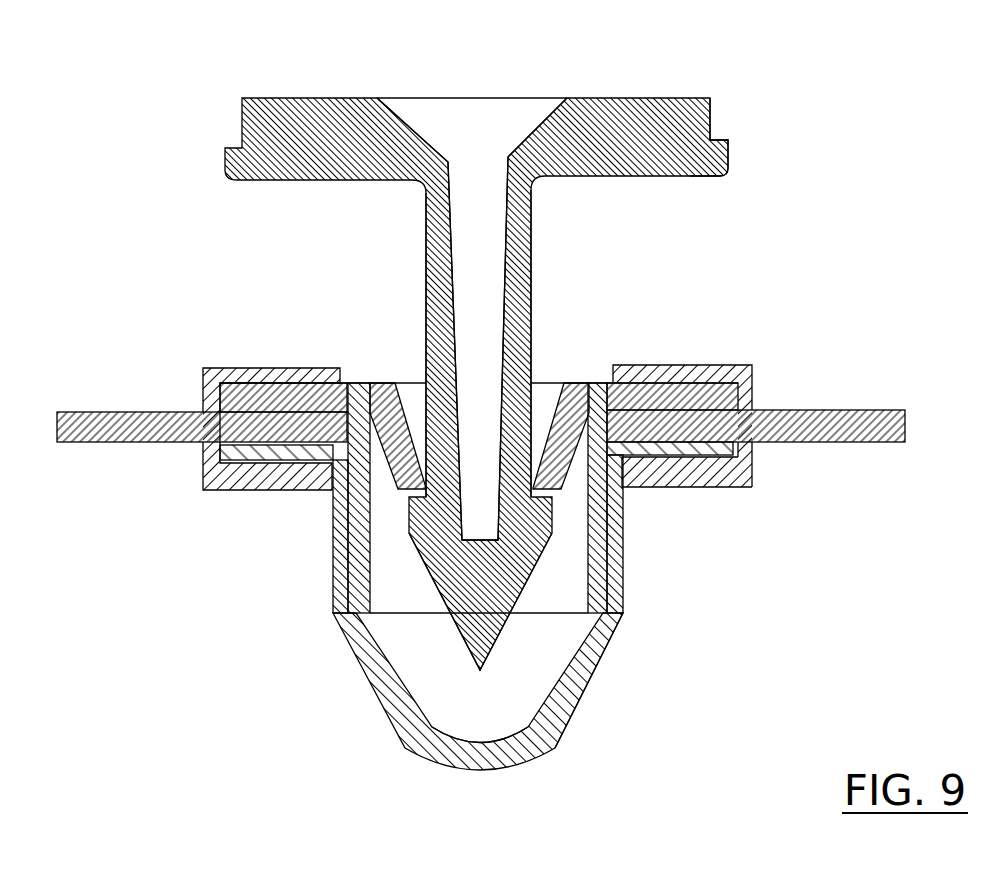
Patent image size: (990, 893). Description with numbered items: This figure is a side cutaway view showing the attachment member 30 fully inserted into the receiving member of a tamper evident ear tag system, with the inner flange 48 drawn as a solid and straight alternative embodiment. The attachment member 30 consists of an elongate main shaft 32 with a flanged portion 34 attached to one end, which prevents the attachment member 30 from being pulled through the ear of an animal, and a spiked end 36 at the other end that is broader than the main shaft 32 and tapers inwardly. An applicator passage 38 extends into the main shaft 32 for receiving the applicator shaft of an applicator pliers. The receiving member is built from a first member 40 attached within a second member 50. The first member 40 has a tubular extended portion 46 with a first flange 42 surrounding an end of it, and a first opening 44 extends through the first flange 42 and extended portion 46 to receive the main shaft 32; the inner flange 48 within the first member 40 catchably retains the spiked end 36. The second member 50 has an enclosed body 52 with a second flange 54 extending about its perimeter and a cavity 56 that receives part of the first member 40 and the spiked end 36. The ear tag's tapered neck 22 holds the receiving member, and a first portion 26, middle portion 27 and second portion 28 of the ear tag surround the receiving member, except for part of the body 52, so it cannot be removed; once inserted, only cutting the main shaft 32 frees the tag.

The tapered neck 22 is at (150, 410).
The first portion 26 is at (683, 362).
The middle portion 27 is at (727, 425).
The second portion 28 is at (713, 487).
The attachment member 30 is at (603, 96).
The main shaft 32 is at (530, 293).
The flanged portion 34 is at (712, 120).
The spiked end 36 is at (502, 630).
The applicator passage 38 is at (468, 130).
The first member 40 is at (293, 382).
The first flange 42 is at (740, 398).
The first opening 44 is at (413, 403).
The extended portion 46 is at (624, 587).
The inner flange 48 is at (552, 405).
The second member 50 is at (396, 732).
The body 52 is at (602, 655).
The second flange 54 is at (702, 458).
The cavity 56 is at (433, 703).